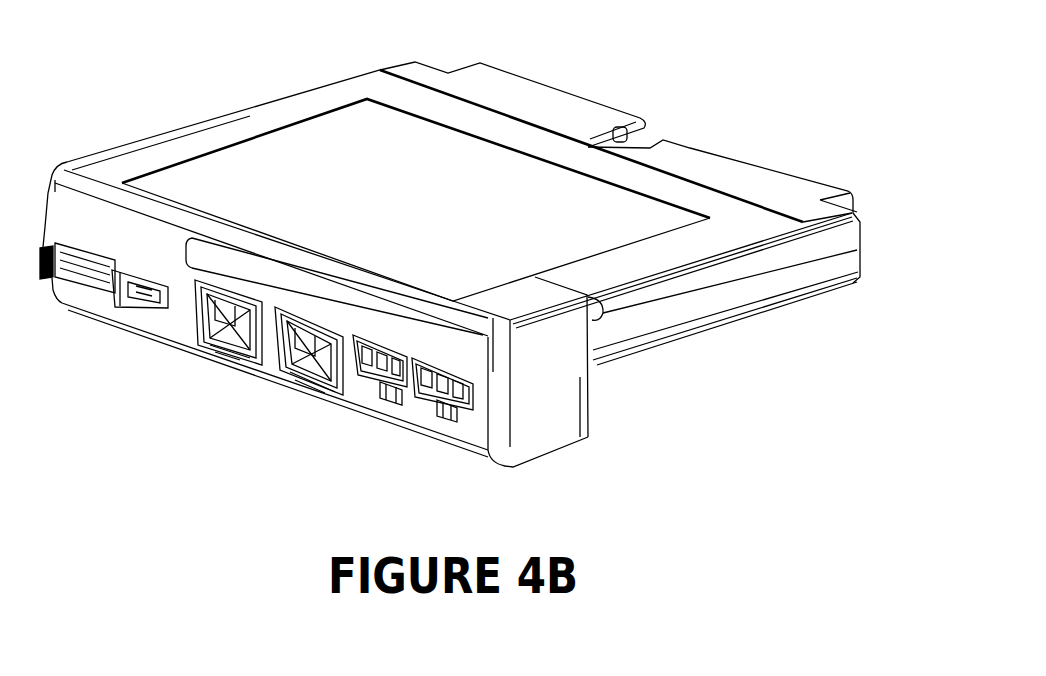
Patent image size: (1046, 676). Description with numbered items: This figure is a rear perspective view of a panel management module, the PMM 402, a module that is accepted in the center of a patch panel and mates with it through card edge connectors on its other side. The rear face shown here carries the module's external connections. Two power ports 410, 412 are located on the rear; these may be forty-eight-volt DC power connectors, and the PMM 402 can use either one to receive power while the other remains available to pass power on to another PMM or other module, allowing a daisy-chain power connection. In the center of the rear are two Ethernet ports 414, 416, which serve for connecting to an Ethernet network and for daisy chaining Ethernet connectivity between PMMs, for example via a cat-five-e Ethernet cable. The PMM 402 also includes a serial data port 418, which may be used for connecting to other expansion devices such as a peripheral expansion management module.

The panel management module (PMM) 402 is at (656, 62).
The power port 410 is at (448, 428).
The power port 412 is at (380, 404).
The Ethernet port 414 is at (297, 390).
The Ethernet port 416 is at (217, 365).
The RS-485 data port 418 is at (97, 300).